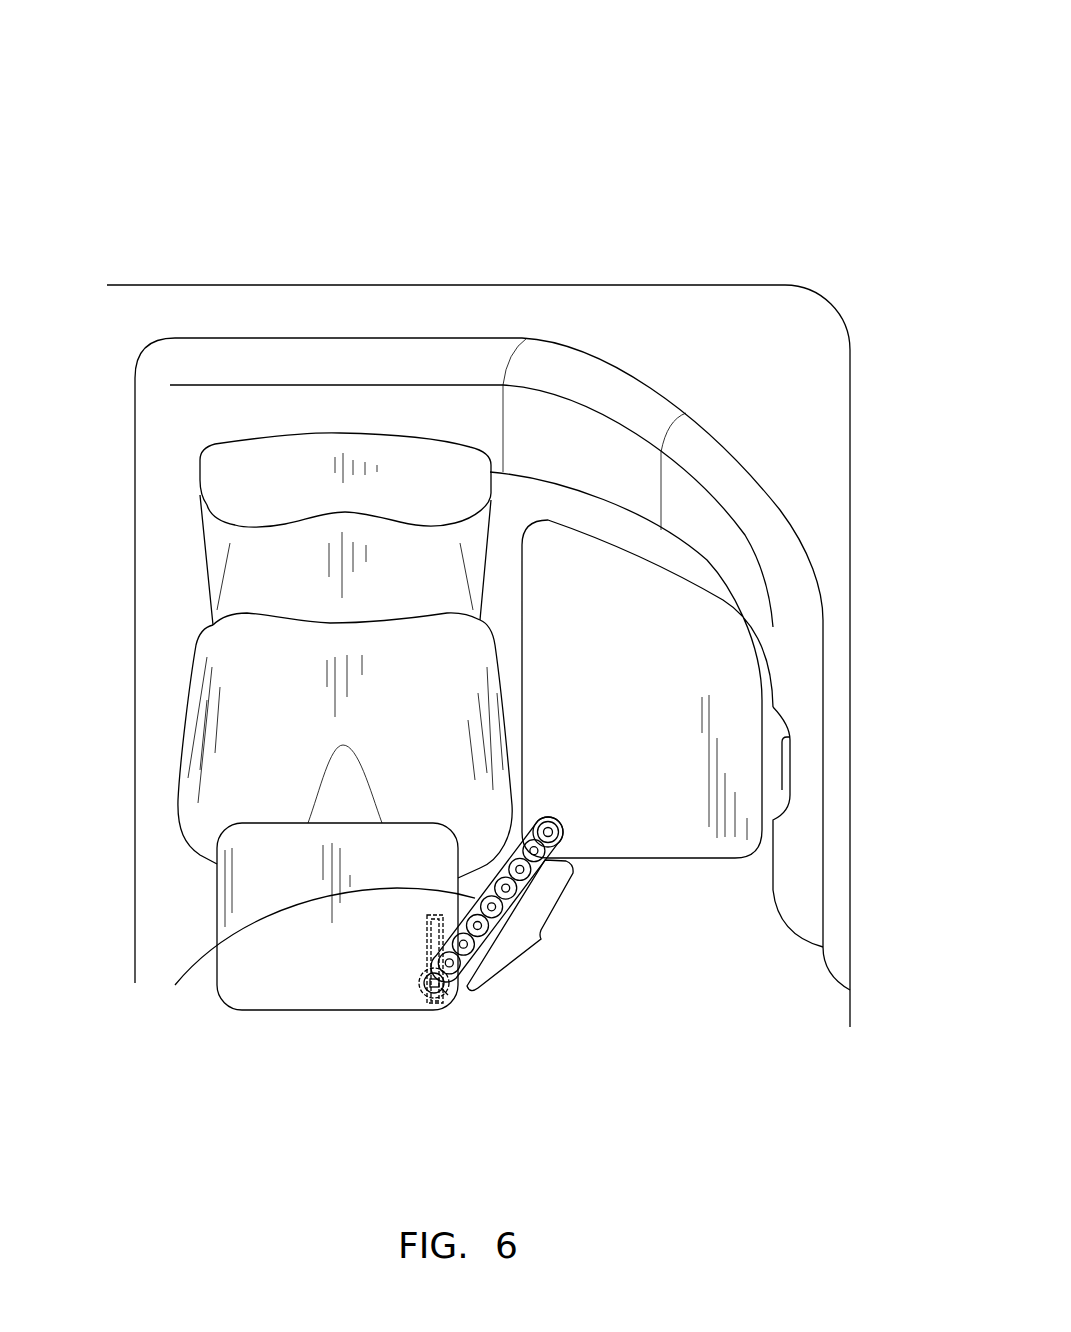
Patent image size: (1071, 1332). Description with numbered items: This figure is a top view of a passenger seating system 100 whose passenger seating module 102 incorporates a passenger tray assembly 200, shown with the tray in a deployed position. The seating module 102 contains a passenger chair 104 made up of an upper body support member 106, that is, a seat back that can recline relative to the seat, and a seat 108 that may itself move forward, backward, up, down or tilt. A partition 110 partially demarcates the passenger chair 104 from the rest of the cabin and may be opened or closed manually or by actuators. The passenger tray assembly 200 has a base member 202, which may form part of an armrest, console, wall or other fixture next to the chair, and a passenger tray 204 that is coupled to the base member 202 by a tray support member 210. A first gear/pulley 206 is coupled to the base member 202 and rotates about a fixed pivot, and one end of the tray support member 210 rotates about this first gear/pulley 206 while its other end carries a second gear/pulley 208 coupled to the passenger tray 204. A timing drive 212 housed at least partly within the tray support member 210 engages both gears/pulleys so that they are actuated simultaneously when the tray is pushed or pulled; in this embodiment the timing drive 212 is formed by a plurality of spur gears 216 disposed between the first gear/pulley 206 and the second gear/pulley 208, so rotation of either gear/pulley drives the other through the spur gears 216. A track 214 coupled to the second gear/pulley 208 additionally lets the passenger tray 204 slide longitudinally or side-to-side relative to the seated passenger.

The passenger seating system 100 is at (155, 122).
The passenger seating module 102 is at (653, 382).
The passenger chair 104 is at (393, 435).
The upper body support member 106 is at (220, 540).
The seat 108 is at (228, 742).
The partition 110 is at (135, 690).
The passenger tray assembly 200 is at (432, 1023).
The base member 202 is at (732, 640).
The passenger tray 204 is at (237, 1005).
The first gear/pulley 206 is at (565, 837).
The second gear/pulley 208 is at (441, 988).
The tray support member 210 is at (530, 885).
The timing drive 212 is at (531, 925).
The track 214 is at (427, 935).
The spur gears 216 is at (311, 954).